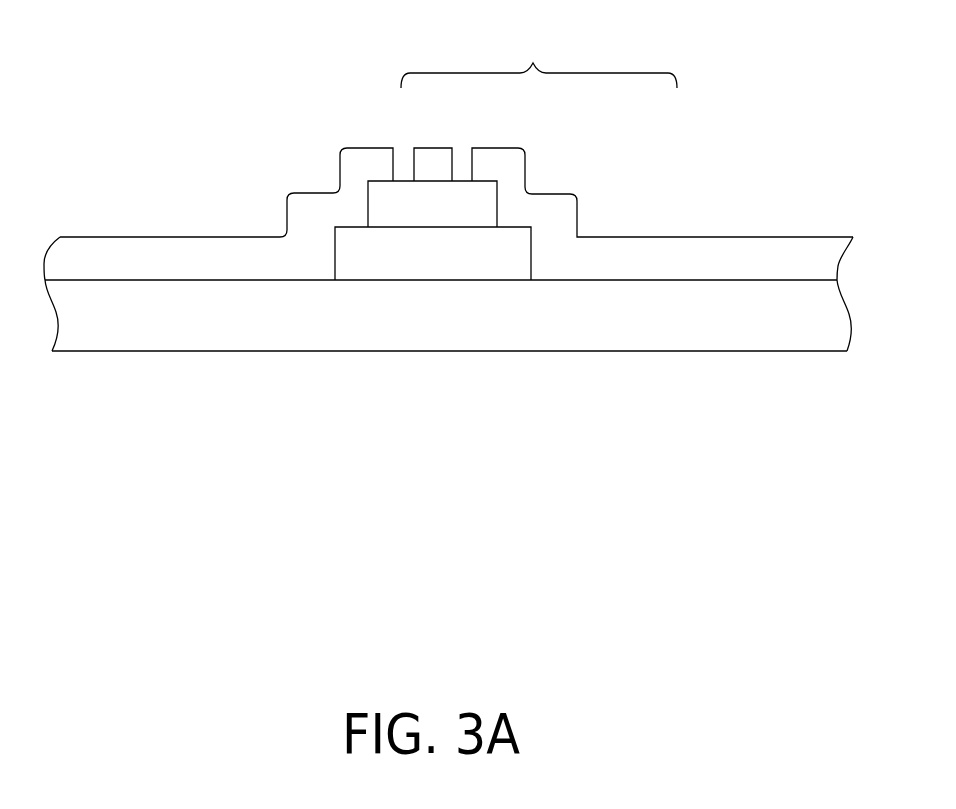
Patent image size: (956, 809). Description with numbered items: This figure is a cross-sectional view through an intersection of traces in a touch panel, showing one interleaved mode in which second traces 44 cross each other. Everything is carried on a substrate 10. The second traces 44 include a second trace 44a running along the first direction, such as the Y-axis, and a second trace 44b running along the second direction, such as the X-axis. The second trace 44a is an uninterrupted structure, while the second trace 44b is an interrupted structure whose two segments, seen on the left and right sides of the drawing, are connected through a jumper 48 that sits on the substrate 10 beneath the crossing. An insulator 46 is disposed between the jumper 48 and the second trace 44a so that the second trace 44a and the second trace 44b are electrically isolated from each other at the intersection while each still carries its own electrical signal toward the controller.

The substrate 10 is at (450, 331).
The second trace 44 is at (534, 63).
The second trace along the first direction 44a is at (433, 158).
The second trace along the second direction 44b is at (188, 251).
The insulator 46 is at (450, 221).
The jumper 48 is at (450, 271).